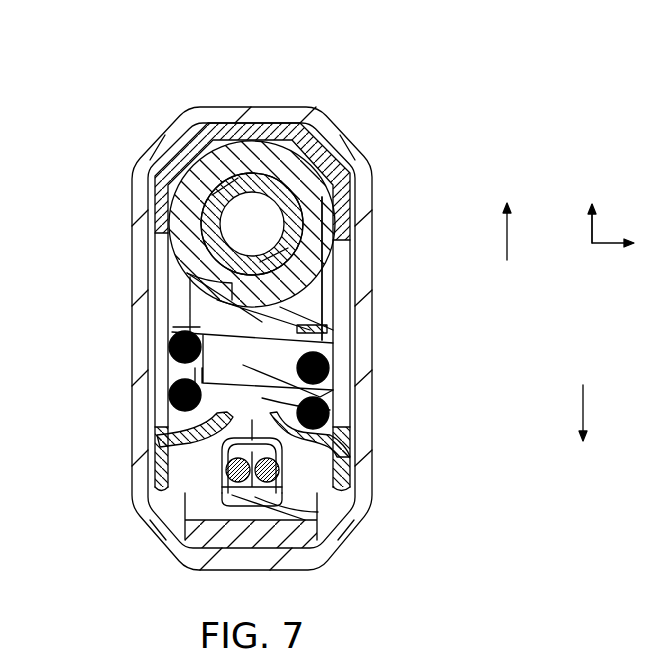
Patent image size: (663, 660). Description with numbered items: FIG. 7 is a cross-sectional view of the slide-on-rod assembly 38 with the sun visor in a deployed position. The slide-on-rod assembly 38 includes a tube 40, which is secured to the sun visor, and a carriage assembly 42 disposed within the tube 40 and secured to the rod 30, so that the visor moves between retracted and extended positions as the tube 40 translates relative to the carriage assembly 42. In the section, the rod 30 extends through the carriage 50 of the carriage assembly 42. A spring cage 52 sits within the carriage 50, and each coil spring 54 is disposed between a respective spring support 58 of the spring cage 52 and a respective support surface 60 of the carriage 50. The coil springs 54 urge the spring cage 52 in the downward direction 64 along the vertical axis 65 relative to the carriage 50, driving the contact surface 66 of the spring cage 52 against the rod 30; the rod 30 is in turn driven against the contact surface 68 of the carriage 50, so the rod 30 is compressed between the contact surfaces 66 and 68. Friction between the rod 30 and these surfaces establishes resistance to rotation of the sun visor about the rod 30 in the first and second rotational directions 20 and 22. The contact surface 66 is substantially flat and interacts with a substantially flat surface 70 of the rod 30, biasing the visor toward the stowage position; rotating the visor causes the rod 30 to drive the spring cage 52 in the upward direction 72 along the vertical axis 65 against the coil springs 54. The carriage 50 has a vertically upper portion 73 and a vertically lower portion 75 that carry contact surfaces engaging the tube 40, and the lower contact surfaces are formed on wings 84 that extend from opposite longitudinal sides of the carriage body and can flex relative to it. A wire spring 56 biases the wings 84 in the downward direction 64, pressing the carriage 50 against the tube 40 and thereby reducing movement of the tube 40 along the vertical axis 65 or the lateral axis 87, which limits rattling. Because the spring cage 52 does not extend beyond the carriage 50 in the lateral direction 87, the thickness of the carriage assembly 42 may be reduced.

The first rotational direction 20 is at (366, 112).
The second rotational direction 22 is at (135, 112).
The rod 30 is at (225, 192).
The slide-on-rod assembly 38 is at (100, 226).
The tube 40 is at (137, 348).
The carriage assembly 42 is at (399, 256).
The carriage 50 is at (205, 302).
The spring cage 52 is at (267, 130).
The coil springs 54 is at (320, 397).
The wire spring 56 is at (223, 480).
The spring supports 58 is at (200, 437).
The support surfaces 60 is at (258, 334).
The downward direction 64 is at (582, 410).
The vertical axis 65 is at (590, 229).
The contact surface of the spring cage 66 is at (288, 140).
The contact surface of the carriage 68 is at (232, 283).
The substantially flat surface of the rod 70 is at (322, 190).
The upward direction 72 is at (505, 232).
The vertically upper portion of the carriage 73 is at (396, 167).
The vertically lower portion of the carriage 75 is at (390, 522).
The wings 84 is at (283, 537).
The lateral axis 87 is at (596, 246).